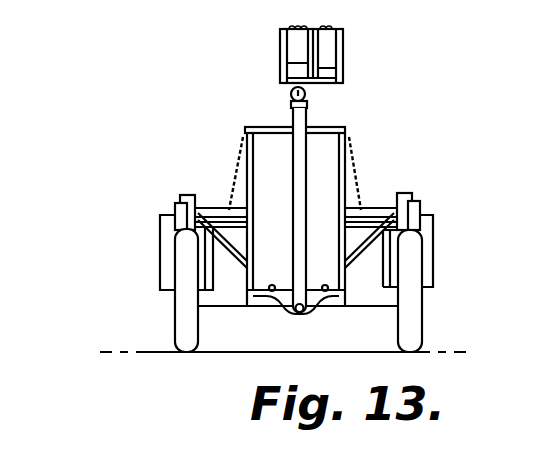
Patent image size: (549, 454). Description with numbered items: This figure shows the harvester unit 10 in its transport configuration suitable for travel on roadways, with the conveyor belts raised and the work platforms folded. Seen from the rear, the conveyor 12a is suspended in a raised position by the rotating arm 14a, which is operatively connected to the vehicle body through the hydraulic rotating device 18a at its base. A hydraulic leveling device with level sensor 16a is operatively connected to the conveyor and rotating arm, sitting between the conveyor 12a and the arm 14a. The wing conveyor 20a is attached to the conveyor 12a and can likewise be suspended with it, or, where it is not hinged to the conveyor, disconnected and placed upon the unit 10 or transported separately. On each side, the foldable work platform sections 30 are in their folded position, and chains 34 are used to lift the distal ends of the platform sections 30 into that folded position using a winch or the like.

The harvester unit 10 is at (138, 84).
The conveyor 12a is at (281, 51).
The wing conveyor 20a is at (345, 52).
The rotating arm 14a is at (291, 113).
The hydraulic leveling device with level sensor 16a is at (306, 93).
The hydraulic rotating device 18a is at (303, 316).
The chains 34 is at (241, 148).
The foldable work platform section 30 is at (185, 195).